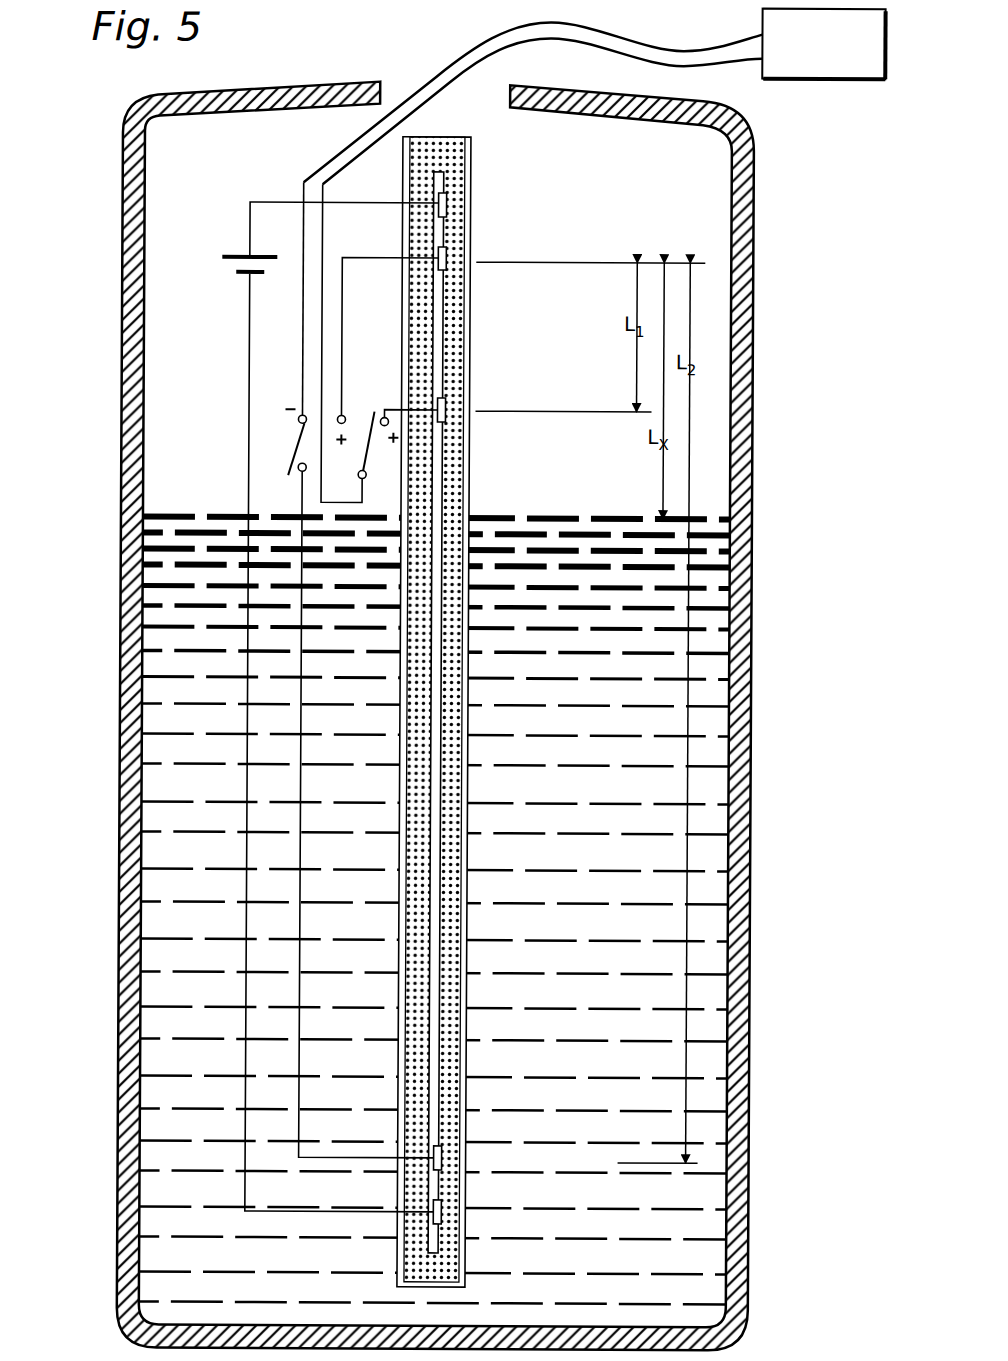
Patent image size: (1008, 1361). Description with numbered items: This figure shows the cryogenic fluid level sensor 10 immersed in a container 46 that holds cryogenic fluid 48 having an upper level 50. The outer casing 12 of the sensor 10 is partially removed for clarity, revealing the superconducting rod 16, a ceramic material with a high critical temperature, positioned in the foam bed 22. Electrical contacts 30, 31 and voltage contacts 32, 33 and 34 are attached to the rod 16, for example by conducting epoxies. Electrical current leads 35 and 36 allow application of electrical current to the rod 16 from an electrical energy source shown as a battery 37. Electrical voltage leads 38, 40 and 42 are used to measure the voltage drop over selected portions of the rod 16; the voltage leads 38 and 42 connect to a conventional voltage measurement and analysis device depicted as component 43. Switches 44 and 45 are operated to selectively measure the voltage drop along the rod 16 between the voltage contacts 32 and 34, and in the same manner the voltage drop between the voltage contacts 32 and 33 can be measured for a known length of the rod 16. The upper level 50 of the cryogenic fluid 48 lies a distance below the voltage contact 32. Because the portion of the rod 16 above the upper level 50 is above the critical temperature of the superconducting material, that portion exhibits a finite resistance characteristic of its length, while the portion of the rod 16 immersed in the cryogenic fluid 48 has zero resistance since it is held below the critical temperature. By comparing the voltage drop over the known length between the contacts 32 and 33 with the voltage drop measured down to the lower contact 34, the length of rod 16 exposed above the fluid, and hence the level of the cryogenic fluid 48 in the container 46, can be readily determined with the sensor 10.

The cryogenic fluid level sensor 10 is at (515, 855).
The outer casing 12 is at (462, 1050).
The superconducting rod 16 is at (433, 976).
The foam bed 22 is at (455, 478).
The electrical contact 30 is at (444, 210).
The electrical contact 31 is at (444, 1212).
The voltage contact 32 is at (444, 270).
The voltage contact 33 is at (446, 416).
The voltage contact 34 is at (442, 1146).
The electrical current lead 35 is at (268, 203).
The electrical current lead 36 is at (247, 372).
The battery 37 is at (237, 255).
The electrical voltage lead 38 is at (345, 310).
The electrical voltage lead 40 is at (300, 500).
The electrical voltage lead 42 is at (393, 406).
The voltage measurement and analysis device 43 is at (812, 62).
The switch 44 is at (297, 445).
The switch 45 is at (373, 447).
The container 46 is at (125, 266).
The cryogenic fluid 48 is at (196, 668).
The upper level 50 is at (190, 510).